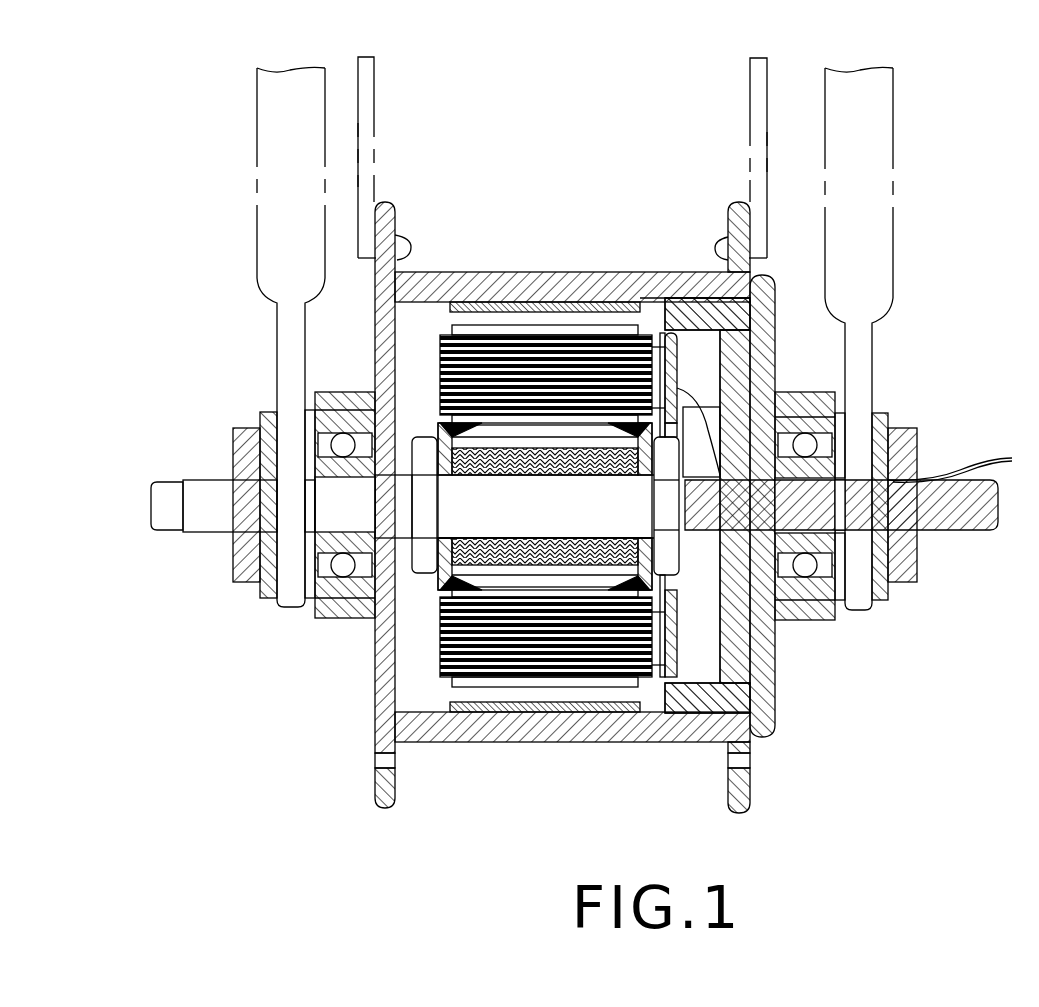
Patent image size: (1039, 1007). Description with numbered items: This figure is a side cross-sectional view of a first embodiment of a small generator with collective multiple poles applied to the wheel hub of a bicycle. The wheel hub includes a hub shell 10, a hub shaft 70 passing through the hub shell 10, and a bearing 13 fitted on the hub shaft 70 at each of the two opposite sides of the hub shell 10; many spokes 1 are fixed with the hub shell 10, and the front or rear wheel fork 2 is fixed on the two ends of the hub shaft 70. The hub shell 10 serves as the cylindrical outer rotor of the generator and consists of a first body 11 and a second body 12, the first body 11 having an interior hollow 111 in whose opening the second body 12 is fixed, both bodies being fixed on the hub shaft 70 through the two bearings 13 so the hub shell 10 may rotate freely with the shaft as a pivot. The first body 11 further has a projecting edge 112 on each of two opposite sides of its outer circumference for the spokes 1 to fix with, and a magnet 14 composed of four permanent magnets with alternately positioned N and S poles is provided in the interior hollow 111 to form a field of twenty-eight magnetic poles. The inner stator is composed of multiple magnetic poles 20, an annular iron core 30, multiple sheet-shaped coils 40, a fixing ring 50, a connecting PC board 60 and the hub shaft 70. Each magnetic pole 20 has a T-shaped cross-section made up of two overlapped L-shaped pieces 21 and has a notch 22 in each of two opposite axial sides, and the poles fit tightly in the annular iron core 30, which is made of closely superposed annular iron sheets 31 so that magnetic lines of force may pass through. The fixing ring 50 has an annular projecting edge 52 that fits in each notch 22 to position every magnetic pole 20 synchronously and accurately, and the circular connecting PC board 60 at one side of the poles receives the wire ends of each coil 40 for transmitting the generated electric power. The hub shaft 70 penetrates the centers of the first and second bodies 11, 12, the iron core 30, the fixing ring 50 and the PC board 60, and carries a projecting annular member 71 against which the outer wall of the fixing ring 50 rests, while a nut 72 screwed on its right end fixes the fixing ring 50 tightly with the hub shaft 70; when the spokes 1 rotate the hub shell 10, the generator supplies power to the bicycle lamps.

The spokes 1 is at (750, 120).
The wheel fork 2 is at (893, 180).
The hub shell 10 is at (562, 472).
The first body 11 is at (572, 272).
The interior hollow 111 is at (443, 308).
The projecting edge 112 is at (730, 220).
The second body 12 is at (764, 305).
The bearing 13 is at (345, 600).
The magnet 14 is at (523, 300).
The magnetic pole 20 is at (570, 688).
The L-shaped piece 21 is at (480, 680).
The notch 22 is at (638, 586).
The annular iron core 30 is at (675, 542).
The annular iron sheet 31 is at (410, 430).
The sheet-shaped coil 40 is at (665, 372).
The fixing ring 50 is at (658, 586).
The annular projecting edge 52 is at (640, 585).
The connecting PC board 60 is at (676, 389).
The hub shaft 70 is at (943, 542).
The projecting annular member 71 is at (370, 408).
The nut 72 is at (780, 625).